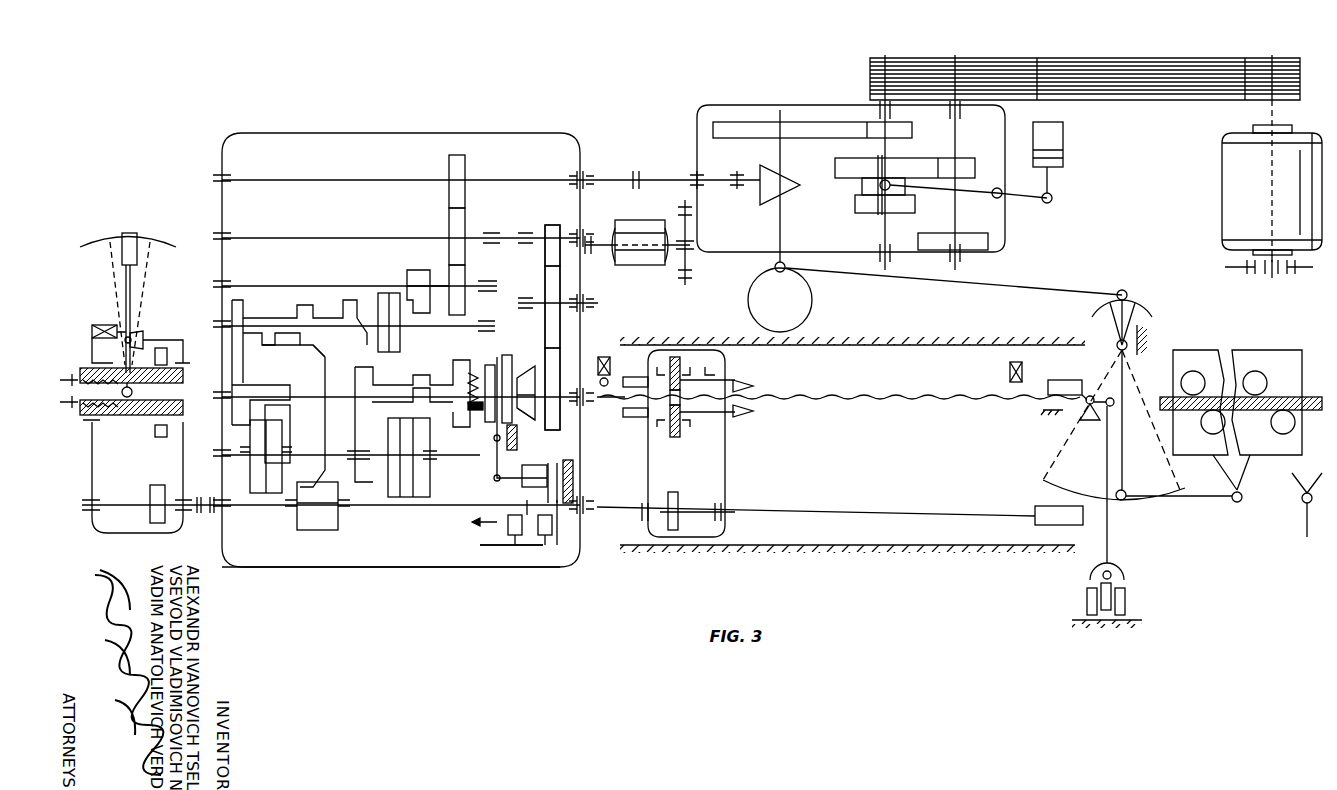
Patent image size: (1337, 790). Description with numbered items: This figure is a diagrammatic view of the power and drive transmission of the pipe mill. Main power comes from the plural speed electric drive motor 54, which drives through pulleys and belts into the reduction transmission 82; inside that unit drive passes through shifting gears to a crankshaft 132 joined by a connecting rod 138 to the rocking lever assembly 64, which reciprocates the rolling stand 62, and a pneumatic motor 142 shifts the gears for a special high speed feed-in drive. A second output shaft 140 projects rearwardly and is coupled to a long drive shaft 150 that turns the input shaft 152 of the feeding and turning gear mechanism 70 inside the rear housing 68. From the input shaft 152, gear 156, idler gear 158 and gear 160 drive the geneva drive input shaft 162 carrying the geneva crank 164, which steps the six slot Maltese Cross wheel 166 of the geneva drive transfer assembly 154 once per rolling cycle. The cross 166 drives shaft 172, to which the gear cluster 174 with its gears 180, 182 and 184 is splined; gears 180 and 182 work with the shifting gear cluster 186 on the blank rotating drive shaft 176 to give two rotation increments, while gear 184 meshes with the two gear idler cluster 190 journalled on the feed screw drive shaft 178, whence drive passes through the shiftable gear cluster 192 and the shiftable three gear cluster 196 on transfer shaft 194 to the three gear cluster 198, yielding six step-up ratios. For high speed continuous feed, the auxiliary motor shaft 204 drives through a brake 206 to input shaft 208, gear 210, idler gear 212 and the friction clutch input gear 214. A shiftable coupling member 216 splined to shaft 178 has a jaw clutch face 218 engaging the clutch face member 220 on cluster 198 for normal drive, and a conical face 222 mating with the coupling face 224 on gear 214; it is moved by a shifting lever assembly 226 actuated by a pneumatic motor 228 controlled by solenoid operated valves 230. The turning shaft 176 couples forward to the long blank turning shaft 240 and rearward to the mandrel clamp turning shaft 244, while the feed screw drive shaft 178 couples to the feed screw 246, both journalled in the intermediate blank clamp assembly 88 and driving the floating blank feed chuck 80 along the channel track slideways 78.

The plural speed electric drive motor 54 is at (1230, 193).
The rolling stand 62 is at (1218, 345).
The rocking lever assembly 64 is at (1120, 318).
The rear housing 68 is at (470, 567).
The feeding and turning gear mechanism 70 is at (382, 546).
The channel track slideways 78 is at (888, 348).
The floating blank feed chuck 80 is at (708, 418).
The reduction transmission 82 is at (718, 100).
The intermediate blank clamp assembly 88 is at (1072, 415).
The crankshaft 132 is at (778, 230).
The connecting rod 138 is at (975, 285).
The shaft 140 is at (660, 178).
The pneumatic motor 142 is at (1062, 143).
The long drive shaft 150 is at (615, 178).
The input shaft 152 is at (334, 180).
The geneva drive transfer assembly 154 is at (398, 281).
The gear 156 is at (447, 165).
The idler gear 158 is at (447, 228).
The gear 160 is at (465, 303).
The geneva drive input shaft 162 is at (311, 286).
The geneva crank 164 is at (420, 277).
The Maltese Cross wheel 166 is at (397, 332).
The shaft 172 is at (357, 317).
The gear cluster 174 is at (291, 318).
The blank rotating drive shaft 176 is at (427, 508).
The feed screw drive shaft 178 is at (351, 398).
The gear 180 is at (343, 349).
The gear 182 is at (303, 352).
The gear 184 is at (243, 349).
The shifting gear cluster 186 is at (317, 518).
The two gear idler cluster 190 is at (268, 398).
The shiftable gear cluster 192 is at (273, 463).
The transfer shaft 194 is at (312, 452).
The shiftable three gear cluster 196 is at (397, 468).
The three gear cluster 198 is at (403, 392).
The auxiliary motor shaft 204 is at (623, 267).
The brake 206 is at (690, 260).
The input shaft 208 is at (566, 245).
The gear 210 is at (547, 233).
The idler gear 212 is at (547, 283).
The friction clutch input gear 214 is at (552, 358).
The shiftable coupling member 216 is at (507, 365).
The face 218 is at (478, 418).
The clutch face member 220 is at (477, 370).
The face 222 is at (523, 412).
The coupling face 224 is at (531, 368).
The shifting lever assembly 226 is at (495, 468).
The pneumatic motor 228 is at (558, 508).
The solenoid operated valves 230 is at (534, 553).
The blank turning shaft 240 is at (935, 513).
The mandrel clamp turning shaft 244 is at (132, 507).
The feed screw 246 is at (820, 400).